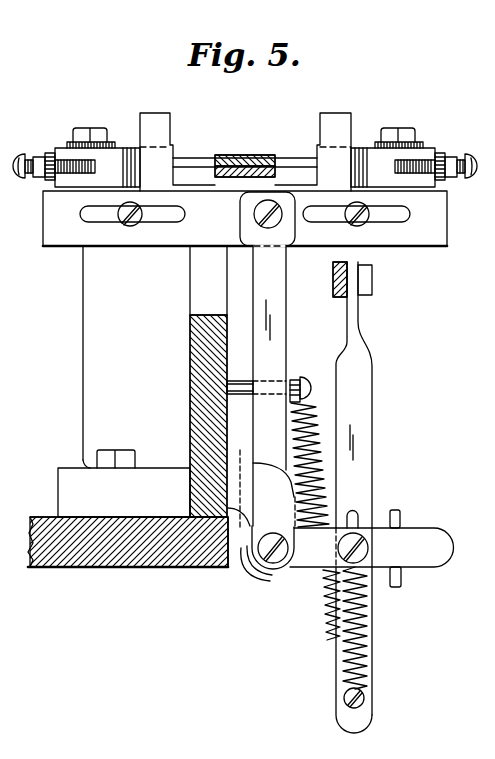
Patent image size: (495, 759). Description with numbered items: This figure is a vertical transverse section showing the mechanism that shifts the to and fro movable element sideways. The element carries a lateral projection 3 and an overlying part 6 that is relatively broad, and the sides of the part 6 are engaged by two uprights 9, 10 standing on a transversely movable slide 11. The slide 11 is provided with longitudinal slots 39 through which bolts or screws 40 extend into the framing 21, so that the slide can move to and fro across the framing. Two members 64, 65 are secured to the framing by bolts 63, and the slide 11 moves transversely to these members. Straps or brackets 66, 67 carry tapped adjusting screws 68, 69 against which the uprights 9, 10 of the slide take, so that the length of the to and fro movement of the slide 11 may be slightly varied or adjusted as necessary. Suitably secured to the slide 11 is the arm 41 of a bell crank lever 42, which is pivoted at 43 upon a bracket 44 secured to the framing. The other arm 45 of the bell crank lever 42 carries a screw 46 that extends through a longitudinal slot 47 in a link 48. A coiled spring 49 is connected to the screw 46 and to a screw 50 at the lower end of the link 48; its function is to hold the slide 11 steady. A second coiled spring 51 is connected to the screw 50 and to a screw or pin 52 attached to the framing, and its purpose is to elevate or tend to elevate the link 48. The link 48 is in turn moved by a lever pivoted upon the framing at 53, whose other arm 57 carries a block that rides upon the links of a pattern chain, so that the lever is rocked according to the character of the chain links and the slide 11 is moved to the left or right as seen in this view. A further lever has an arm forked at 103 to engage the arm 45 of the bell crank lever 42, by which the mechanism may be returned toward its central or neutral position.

The lateral projection 3 is at (262, 158).
The overlying part 6 is at (222, 158).
The upright 9 is at (151, 118).
The upright 10 is at (329, 118).
The slide 11 is at (187, 231).
The framing 21 is at (193, 366).
The longitudinal slot 39 is at (104, 218).
The bolt or screw 40 is at (137, 225).
The arm 41 is at (275, 311).
The bell crank lever 42 is at (262, 571).
The pivot 43 is at (271, 536).
The bracket 44 is at (246, 452).
The arm 45 is at (441, 556).
The screw 46 is at (340, 548).
The longitudinal slot 47 is at (359, 518).
The link 48 is at (362, 436).
The coiled spring 49 is at (364, 606).
The screw 50 is at (344, 698).
The coiled spring 51 is at (332, 592).
The screw or pin 52 is at (309, 378).
The pivot 53 is at (366, 280).
The arm 57 is at (333, 277).
The bolt 63 is at (88, 130).
The member 64 is at (118, 147).
The member 65 is at (360, 147).
The strap or bracket 66 is at (42, 157).
The strap or bracket 67 is at (457, 162).
The adjusting screw 68 is at (62, 162).
The adjusting screw 69 is at (418, 160).
The fork 103 is at (401, 518).